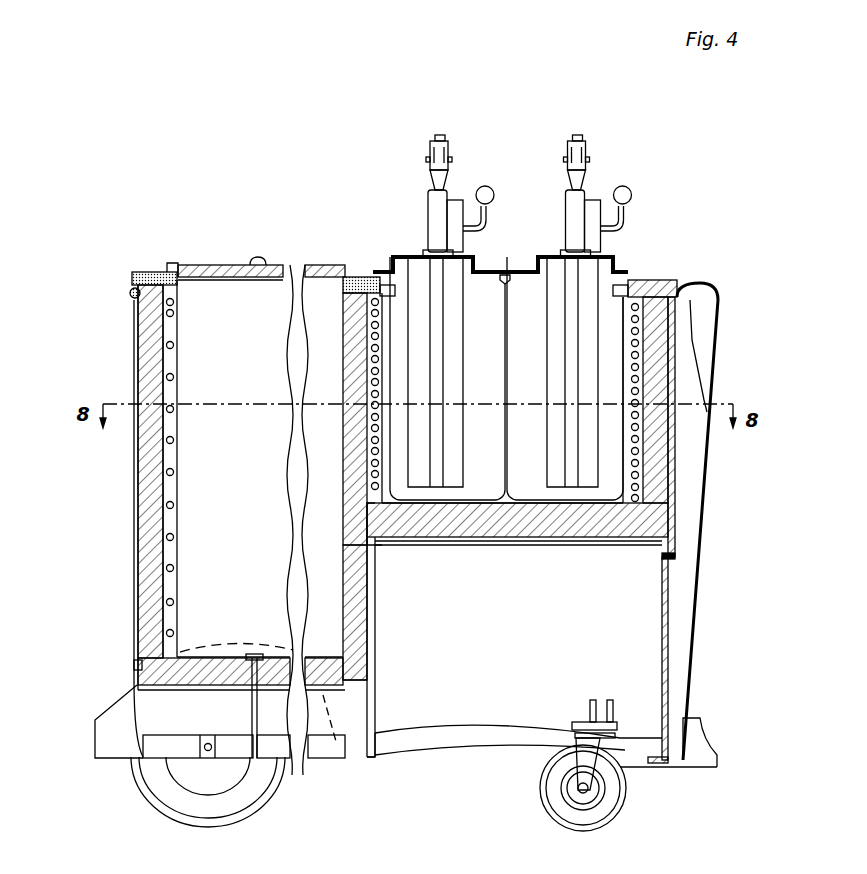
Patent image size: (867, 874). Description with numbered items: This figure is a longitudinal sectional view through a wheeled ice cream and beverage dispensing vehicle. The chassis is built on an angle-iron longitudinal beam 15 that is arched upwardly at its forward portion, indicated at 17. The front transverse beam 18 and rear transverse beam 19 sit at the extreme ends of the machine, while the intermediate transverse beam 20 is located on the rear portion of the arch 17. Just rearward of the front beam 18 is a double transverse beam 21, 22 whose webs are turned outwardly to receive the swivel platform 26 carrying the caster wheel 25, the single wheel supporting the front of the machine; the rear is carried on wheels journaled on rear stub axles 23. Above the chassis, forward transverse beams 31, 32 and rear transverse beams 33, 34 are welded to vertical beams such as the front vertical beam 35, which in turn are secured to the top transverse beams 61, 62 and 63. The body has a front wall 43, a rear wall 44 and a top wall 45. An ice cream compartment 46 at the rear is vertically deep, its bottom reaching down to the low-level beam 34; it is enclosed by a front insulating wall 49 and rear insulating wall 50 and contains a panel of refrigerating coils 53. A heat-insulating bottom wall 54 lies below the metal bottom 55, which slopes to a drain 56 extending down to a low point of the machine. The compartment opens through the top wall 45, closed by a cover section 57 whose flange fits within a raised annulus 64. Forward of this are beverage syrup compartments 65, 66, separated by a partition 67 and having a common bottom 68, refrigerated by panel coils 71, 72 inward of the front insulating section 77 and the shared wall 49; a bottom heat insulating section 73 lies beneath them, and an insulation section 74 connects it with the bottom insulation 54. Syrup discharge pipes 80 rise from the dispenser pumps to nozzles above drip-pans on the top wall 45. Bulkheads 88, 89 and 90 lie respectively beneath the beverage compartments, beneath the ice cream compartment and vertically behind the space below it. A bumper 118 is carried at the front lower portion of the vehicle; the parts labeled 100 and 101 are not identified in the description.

The longitudinal beam 15 is at (290, 758).
The arch 17 is at (515, 735).
The front transverse beam 18 is at (665, 765).
The rear transverse beam 19 is at (200, 757).
The intermediate transverse beam 20 is at (376, 756).
The double transverse beam 21 is at (592, 705).
The double transverse beam 22 is at (612, 705).
The rear stub axle 23 is at (206, 749).
The caster wheel 25 is at (560, 815).
The swivel platform 26 is at (622, 785).
The forward transverse beam 31 is at (378, 547).
The forward transverse beam 32 is at (672, 558).
The rear transverse beam 33 is at (120, 690).
The rear transverse beam 34 is at (376, 690).
The front vertical beam 35 is at (666, 610).
The front wall 43 is at (700, 530).
The rear wall 44 is at (135, 510).
The top wall 45 is at (150, 275).
The ice cream compartment 46 is at (190, 430).
The front insulating wall 49 is at (137, 580).
The rear insulating wall 50 is at (346, 355).
The refrigerating coil panel 53 is at (163, 365).
The heat-insulating bottom wall 54 is at (137, 668).
The metal bottom 55 is at (205, 655).
The drain 56 is at (280, 790).
The cover section 57 is at (237, 267).
The top transverse beam 61 is at (655, 290).
The top transverse beam 62 is at (133, 290).
The top transverse beam 63 is at (363, 275).
The raised annulus 64 is at (165, 266).
The beverage syrup compartment 65 is at (395, 283).
The beverage syrup compartment 66 is at (612, 288).
The partition 67 is at (505, 353).
The common bottom 68 is at (480, 507).
The panel coil 71 is at (360, 405).
The panel coil 72 is at (674, 487).
The bottom heat insulating section 73 is at (410, 522).
The insulation section 74 is at (368, 645).
The front insulating section 77 is at (648, 410).
The syrup discharge pipe 80 is at (435, 285).
The bulkhead 88 is at (455, 540).
The bulkhead 89 is at (175, 680).
The bulkhead 90 is at (376, 615).
The cover plate 100 is at (522, 270).
The faucet 101 is at (555, 260).
The bumper 118 is at (697, 737).